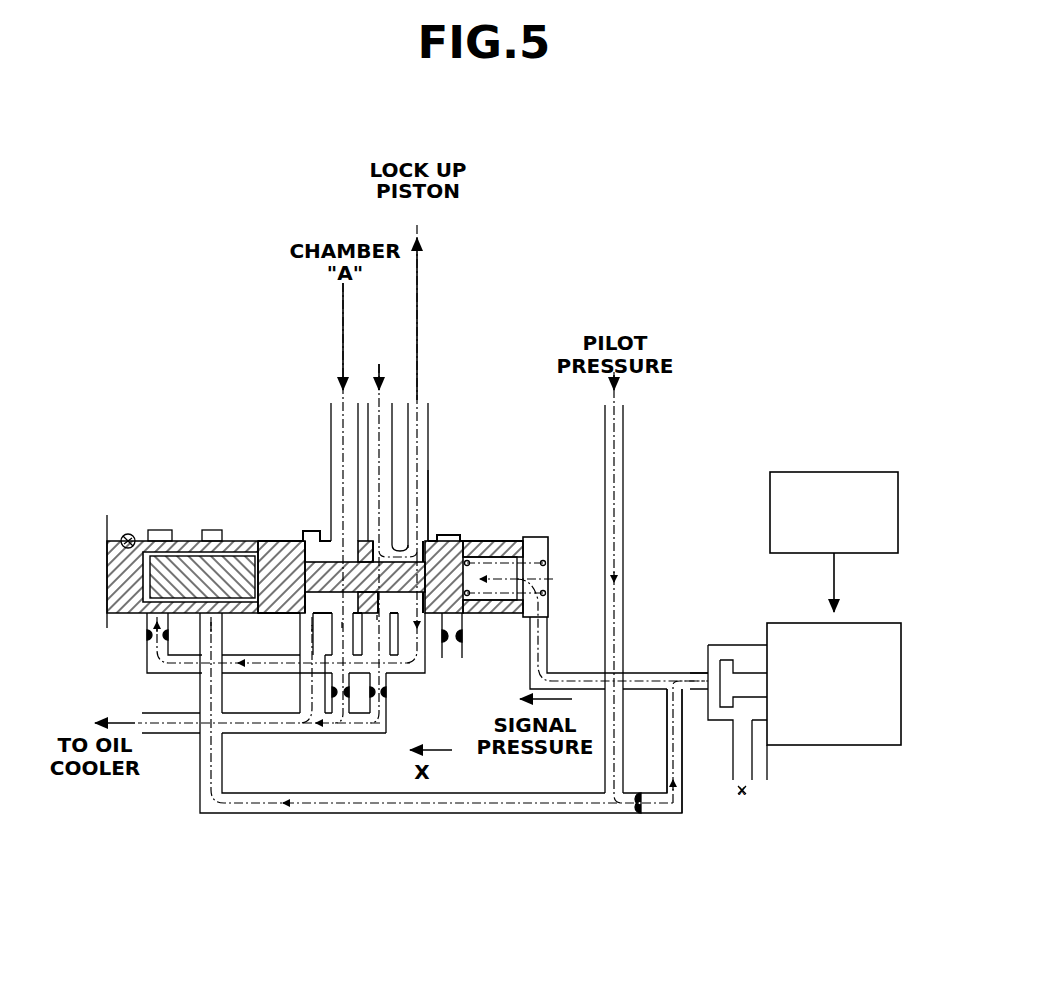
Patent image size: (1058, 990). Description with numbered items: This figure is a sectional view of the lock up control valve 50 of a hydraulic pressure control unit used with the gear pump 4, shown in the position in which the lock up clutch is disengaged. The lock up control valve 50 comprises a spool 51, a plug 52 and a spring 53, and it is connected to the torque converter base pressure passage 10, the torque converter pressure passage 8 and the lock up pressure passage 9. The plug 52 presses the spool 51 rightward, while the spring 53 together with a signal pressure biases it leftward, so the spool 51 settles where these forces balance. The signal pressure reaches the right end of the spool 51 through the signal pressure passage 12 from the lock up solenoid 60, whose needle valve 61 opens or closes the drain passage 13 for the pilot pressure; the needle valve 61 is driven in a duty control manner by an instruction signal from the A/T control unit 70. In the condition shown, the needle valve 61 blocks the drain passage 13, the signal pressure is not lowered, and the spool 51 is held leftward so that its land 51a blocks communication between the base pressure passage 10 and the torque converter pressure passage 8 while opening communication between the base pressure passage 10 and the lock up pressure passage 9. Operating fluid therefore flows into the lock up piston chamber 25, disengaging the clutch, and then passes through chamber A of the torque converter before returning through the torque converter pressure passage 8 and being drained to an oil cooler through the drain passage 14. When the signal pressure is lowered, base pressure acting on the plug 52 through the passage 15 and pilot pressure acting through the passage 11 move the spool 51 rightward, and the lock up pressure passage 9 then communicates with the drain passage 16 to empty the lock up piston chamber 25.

The pump 4 is at (380, 436).
The torque converter pressure passage 8 is at (331, 458).
The lock up pressure passage 9 is at (428, 478).
The torque converter base pressure passage 10 is at (395, 432).
The passage 11 is at (313, 793).
The signal pressure passage 12 is at (553, 672).
The drain passage 13 is at (690, 692).
The drain passage 14 is at (255, 733).
The passage 15 is at (255, 672).
The drain passage 16 is at (458, 636).
The lock up piston chamber 25 is at (418, 379).
The lock up control valve 50 is at (248, 448).
The spool 51 is at (277, 553).
The land 51a is at (362, 537).
The plug 52 is at (185, 536).
The spring 53 is at (555, 580).
The lock up solenoid 60 is at (783, 622).
The needle valve 61 is at (745, 670).
The A/T control unit 70 is at (840, 470).